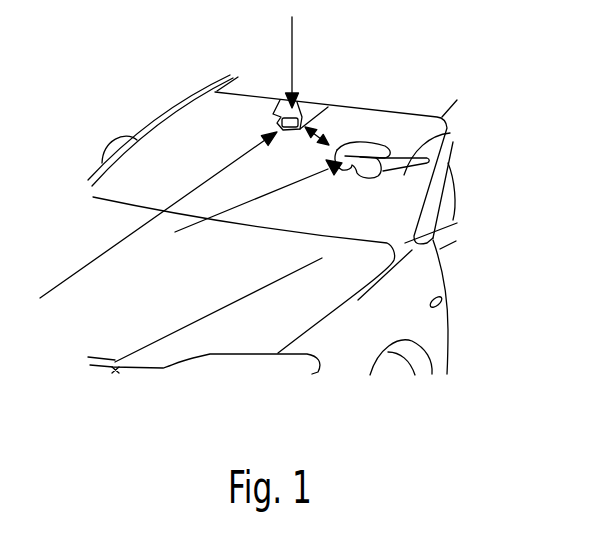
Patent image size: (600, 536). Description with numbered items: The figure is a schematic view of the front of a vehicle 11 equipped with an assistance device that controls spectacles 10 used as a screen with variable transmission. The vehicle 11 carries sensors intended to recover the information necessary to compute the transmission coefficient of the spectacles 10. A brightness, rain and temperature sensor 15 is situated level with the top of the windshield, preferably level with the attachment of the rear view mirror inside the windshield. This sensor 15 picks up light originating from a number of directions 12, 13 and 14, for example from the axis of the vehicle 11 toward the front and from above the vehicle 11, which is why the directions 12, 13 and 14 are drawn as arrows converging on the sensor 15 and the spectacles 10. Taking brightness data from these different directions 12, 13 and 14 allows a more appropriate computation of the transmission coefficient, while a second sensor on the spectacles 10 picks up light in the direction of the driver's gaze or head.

The spectacles 10 is at (450, 133).
The vehicle 11 is at (368, 344).
The direction 12 is at (295, 42).
The direction 13 is at (80, 268).
The direction 14 is at (303, 183).
The brightness, rain and temperature sensor 15 is at (306, 102).